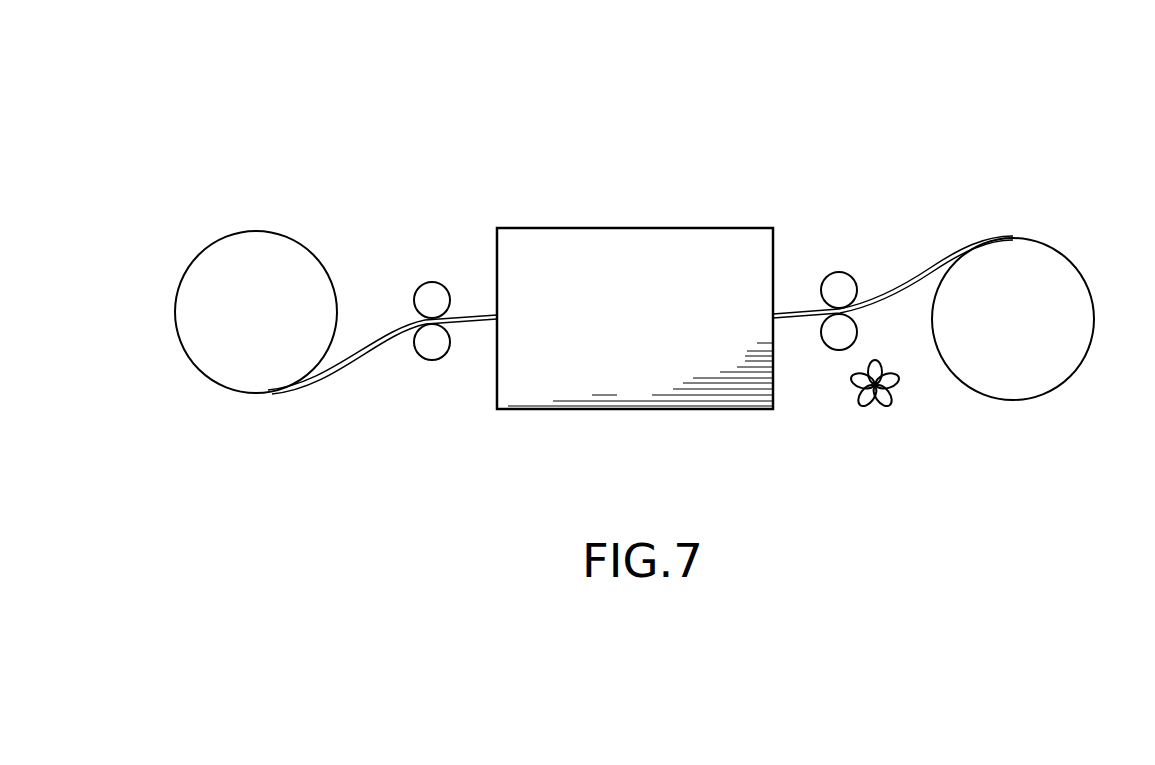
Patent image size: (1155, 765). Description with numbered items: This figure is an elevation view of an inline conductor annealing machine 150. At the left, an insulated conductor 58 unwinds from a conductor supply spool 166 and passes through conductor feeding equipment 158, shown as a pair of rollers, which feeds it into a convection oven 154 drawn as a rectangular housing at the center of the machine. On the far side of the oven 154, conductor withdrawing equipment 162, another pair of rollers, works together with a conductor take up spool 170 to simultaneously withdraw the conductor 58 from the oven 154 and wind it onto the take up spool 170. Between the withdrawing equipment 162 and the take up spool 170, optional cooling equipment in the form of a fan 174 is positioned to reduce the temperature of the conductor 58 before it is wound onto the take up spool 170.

The inline conductor annealing machine 150 is at (720, 139).
The conductor supply spool 166 is at (236, 232).
The insulated conductor 58 is at (345, 367).
The conductor feeding equipment 158 is at (427, 284).
The convection oven 154 is at (553, 227).
The conductor withdrawing equipment 162 is at (840, 272).
The conductor take up spool 170 is at (1027, 238).
The fan 174 is at (876, 410).